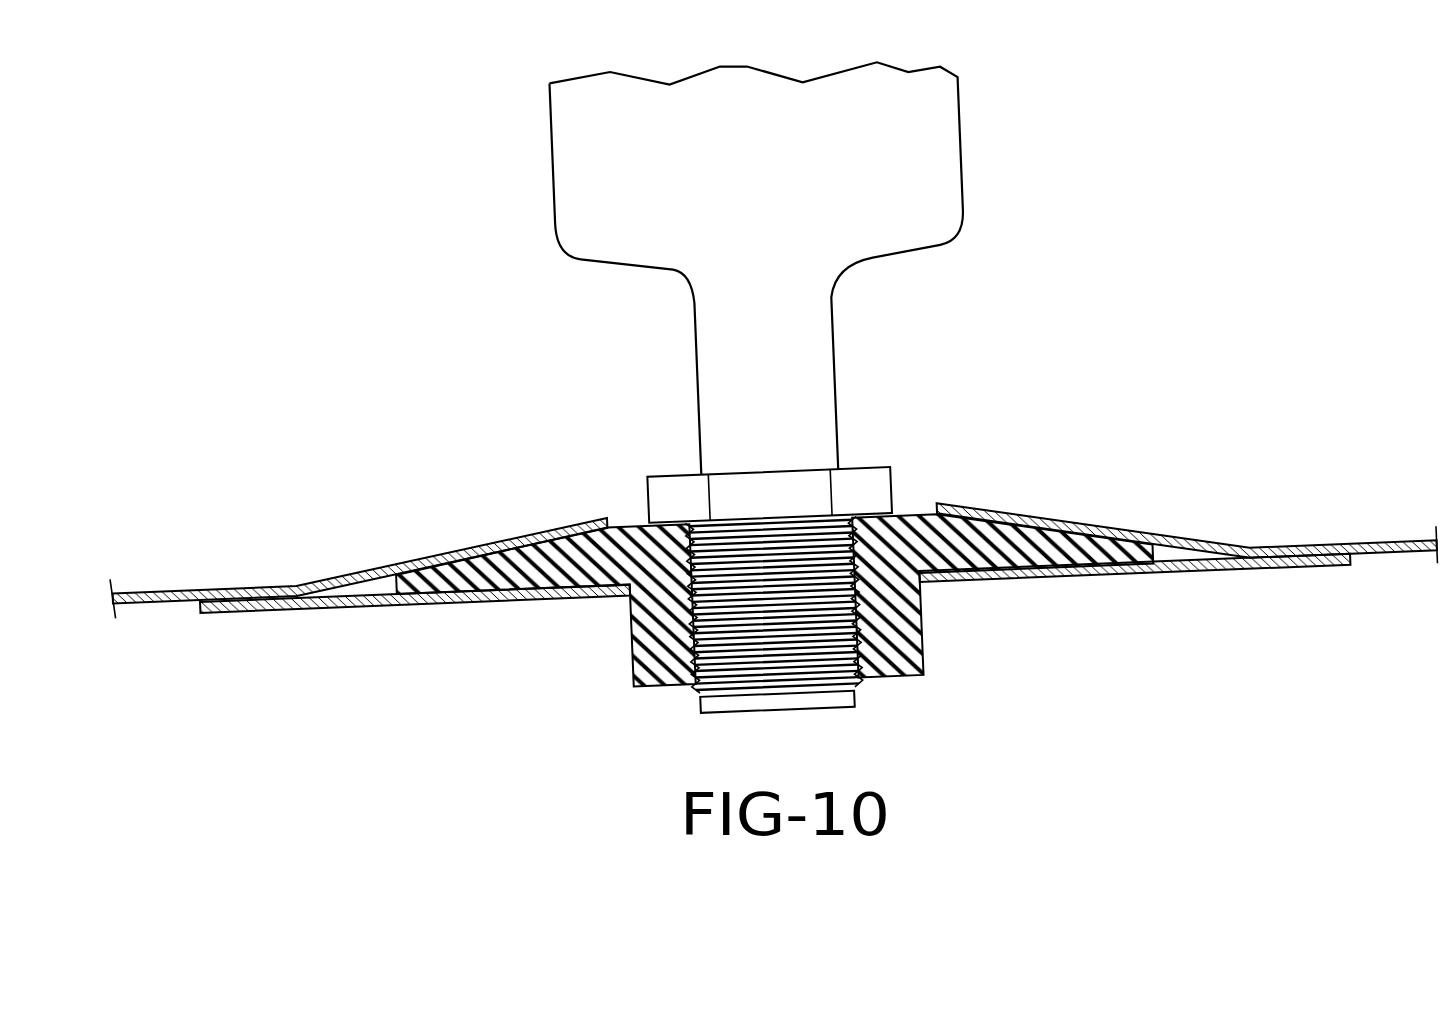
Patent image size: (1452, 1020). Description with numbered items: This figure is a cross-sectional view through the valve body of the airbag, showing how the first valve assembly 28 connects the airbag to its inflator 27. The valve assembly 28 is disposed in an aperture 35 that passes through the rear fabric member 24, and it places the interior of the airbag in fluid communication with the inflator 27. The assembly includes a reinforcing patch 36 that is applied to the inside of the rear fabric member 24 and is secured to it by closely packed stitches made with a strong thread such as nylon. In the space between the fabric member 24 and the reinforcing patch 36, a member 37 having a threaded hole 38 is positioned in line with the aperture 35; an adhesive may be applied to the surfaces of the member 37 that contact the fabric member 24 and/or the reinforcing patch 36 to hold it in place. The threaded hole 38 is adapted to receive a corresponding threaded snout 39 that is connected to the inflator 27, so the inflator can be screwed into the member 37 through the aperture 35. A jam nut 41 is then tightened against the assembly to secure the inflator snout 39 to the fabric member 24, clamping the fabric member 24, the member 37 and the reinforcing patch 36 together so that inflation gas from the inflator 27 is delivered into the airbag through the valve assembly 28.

The rear fabric member 24 is at (177, 590).
The inflator 27 is at (963, 157).
The first valve assembly 28 is at (370, 520).
The aperture 35 is at (625, 505).
The reinforcing patch 36 is at (377, 604).
The member 37 is at (923, 608).
The threaded hole 38 is at (700, 652).
The threaded snout 39 is at (833, 708).
The jam nut 41 is at (893, 477).